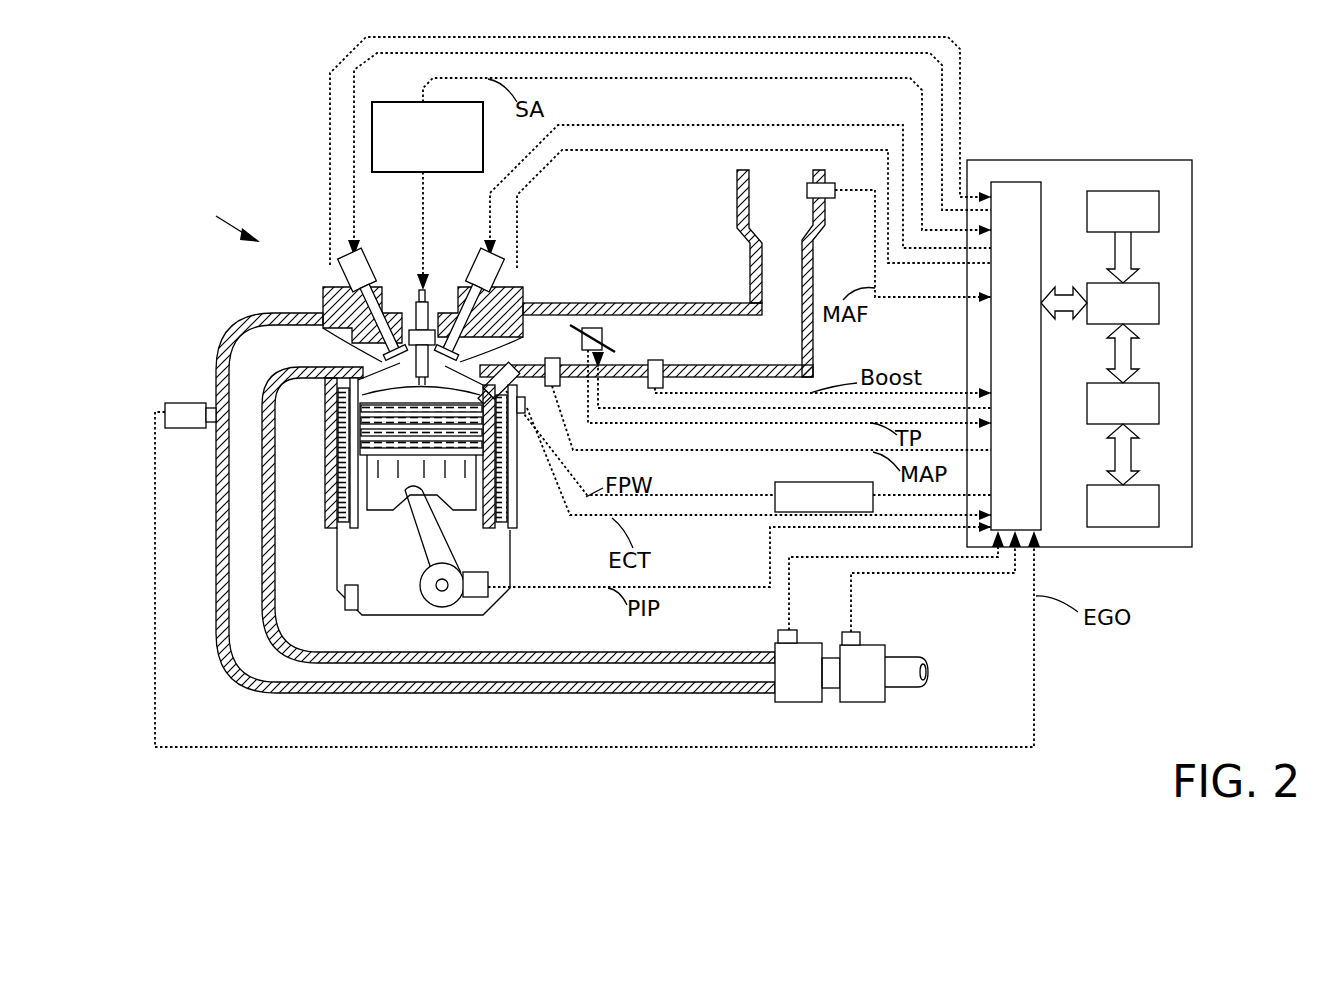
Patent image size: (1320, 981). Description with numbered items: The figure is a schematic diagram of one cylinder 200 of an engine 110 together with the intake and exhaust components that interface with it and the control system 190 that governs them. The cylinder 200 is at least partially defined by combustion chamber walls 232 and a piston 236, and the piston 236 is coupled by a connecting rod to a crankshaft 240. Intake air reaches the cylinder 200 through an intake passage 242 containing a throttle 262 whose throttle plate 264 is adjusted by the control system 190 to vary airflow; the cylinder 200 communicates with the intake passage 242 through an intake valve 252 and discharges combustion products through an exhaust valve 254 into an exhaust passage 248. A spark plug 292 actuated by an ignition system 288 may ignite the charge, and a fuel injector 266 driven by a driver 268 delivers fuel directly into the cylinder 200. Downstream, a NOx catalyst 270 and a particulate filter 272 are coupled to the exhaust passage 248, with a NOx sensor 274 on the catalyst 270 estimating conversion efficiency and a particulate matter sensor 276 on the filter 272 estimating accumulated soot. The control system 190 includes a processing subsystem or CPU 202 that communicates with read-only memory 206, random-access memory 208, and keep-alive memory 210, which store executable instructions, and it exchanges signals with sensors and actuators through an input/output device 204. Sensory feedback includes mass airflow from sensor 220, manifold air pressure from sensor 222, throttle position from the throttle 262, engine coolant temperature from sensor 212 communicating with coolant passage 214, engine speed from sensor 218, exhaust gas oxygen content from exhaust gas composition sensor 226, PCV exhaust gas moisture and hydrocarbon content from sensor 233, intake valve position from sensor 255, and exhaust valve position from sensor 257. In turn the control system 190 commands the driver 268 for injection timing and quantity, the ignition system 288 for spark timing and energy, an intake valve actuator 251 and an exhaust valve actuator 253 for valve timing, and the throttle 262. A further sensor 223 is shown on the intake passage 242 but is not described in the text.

The engine 110 is at (219, 219).
The control system 190 is at (1195, 160).
The cylinder 200 is at (328, 410).
The processing subsystem (CPU) 202 is at (1160, 300).
The input/output device 204 is at (1045, 190).
The read-only memory (ROM) 206 is at (1160, 208).
The random-access memory (RAM) 208 is at (1160, 403).
The keep-alive memory (KAM) 210 is at (1160, 503).
The engine coolant temperature sensor 212 is at (524, 413).
The coolant passage 214 is at (517, 505).
The engine speed sensor 218 is at (480, 600).
The mass airflow sensor 220 is at (835, 185).
The manifold air pressure sensor 222 is at (556, 388).
The boost pressure sensor 223 is at (650, 386).
The exhaust gas composition sensor 226 is at (163, 408).
The combustion chamber walls 232 is at (348, 550).
The PCV exhaust line gas sensor 233 is at (345, 600).
The piston 236 is at (403, 513).
The crankshaft 240 is at (432, 605).
The intake passage 242 is at (766, 219).
The exhaust passage 248 is at (282, 359).
The intake valve actuator 251 is at (478, 268).
The intake valve 252 is at (435, 322).
The exhaust valve actuator 253 is at (364, 268).
The exhaust valve 254 is at (327, 317).
The intake valve position sensor 255 is at (505, 287).
The exhaust valve position sensor 257 is at (337, 275).
The throttle 262 is at (597, 330).
The throttle plate 264 is at (588, 345).
The fuel injector 266 is at (502, 370).
The driver 268 is at (776, 482).
The NOx catalyst 270 is at (783, 684).
The particulate filter 272 is at (847, 684).
The NOx sensor 274 is at (780, 640).
The particulate matter sensor 276 is at (861, 638).
The ignition system 288 is at (377, 102).
The spark plug 292 is at (417, 317).